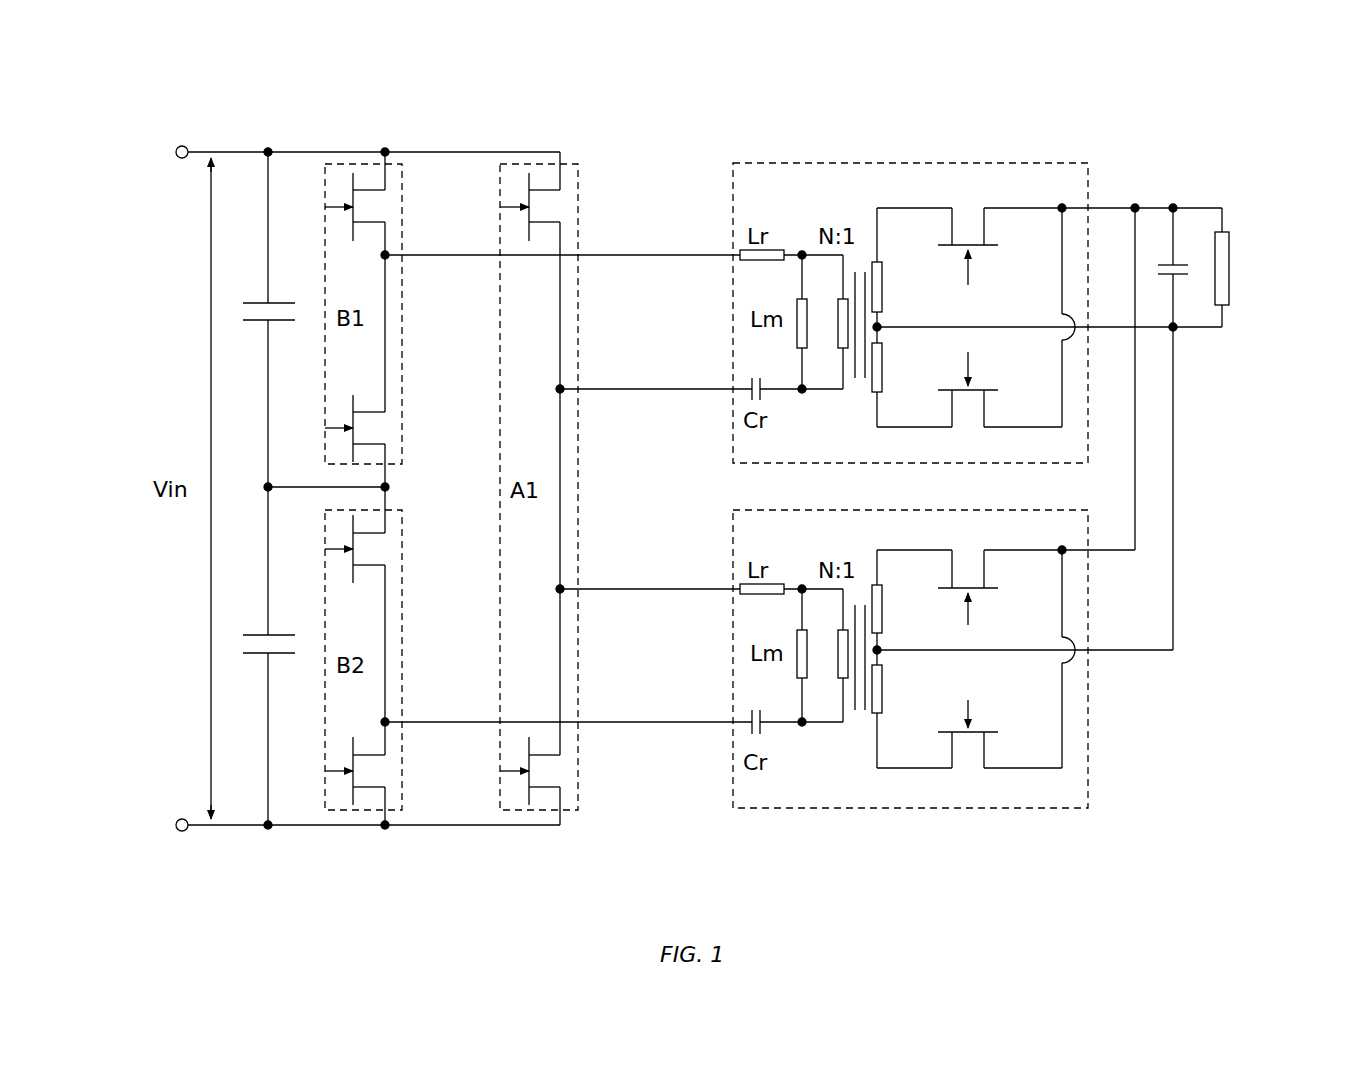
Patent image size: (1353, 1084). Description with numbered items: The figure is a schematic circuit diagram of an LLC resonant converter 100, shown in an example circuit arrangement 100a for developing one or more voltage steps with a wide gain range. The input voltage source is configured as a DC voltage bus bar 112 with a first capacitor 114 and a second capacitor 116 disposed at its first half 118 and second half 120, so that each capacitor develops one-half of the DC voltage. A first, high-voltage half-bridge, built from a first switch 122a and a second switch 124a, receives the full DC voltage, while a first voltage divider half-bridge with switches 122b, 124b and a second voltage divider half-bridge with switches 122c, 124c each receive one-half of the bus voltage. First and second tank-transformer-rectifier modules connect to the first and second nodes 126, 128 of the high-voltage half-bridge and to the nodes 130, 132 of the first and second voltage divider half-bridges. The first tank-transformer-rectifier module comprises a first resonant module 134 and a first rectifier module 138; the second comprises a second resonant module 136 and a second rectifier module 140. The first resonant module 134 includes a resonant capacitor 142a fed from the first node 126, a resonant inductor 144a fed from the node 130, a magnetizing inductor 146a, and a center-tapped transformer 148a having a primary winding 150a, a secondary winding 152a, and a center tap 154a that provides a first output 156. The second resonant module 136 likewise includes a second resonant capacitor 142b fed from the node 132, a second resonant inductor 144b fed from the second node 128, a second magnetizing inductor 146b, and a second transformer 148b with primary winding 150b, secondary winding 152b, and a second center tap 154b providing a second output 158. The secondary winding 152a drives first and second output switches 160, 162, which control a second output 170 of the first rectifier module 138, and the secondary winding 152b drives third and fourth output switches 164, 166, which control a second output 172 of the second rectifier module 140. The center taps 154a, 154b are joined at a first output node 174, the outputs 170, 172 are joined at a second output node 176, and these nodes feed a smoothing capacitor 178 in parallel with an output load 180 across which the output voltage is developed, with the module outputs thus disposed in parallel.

The LLC resonant converter 100 is at (1215, 160).
The circuit arrangement 100a is at (1106, 130).
The DC voltage bus bar 112 is at (150, 320).
The first capacitor 114 is at (255, 322).
The second capacitor 116 is at (260, 633).
The first half 118 is at (165, 192).
The second half 120 is at (160, 690).
The first switch 122a is at (529, 195).
The first switch 122b is at (353, 195).
The first switch 122c is at (353, 555).
The second switch 124a is at (529, 780).
The second switch 124b is at (353, 440).
The second switch 124c is at (353, 780).
The first node 126 is at (565, 388).
The second node 128 is at (565, 588).
The node 130 is at (390, 254).
The node 132 is at (390, 721).
The first resonant module 134 is at (802, 218).
The second resonant module 136 is at (760, 790).
The first rectifier module 138 is at (967, 218).
The second rectifier module 140 is at (963, 755).
The resonant capacitor 142a is at (752, 386).
The second resonant capacitor 142b is at (752, 720).
The resonant inductor 144a is at (762, 258).
The second resonant inductor 144b is at (762, 592).
The magnetizing inductor 146a is at (797, 338).
The second magnetizing inductor 146b is at (797, 672).
The transformer 148a is at (858, 378).
The second transformer 148b is at (858, 710).
The primary winding 150a is at (838, 332).
The primary winding 150b is at (838, 665).
The secondary winding 152a is at (885, 380).
The secondary winding 152b is at (885, 700).
The center tap 154a is at (880, 326).
The second center tap 154b is at (880, 649).
The first output 156 is at (1012, 330).
The second output 158 is at (1040, 652).
The first output switch 160 is at (980, 248).
The second output switch 162 is at (945, 390).
The third output switch 164 is at (983, 592).
The fourth output switch 166 is at (945, 732).
The second output 170 is at (1062, 205).
The second output 172 is at (1065, 548).
The first output node 174 is at (1175, 330).
The second output node 176 is at (1137, 205).
The smoothing capacitor 178 is at (1180, 266).
The output load 180 is at (1232, 292).